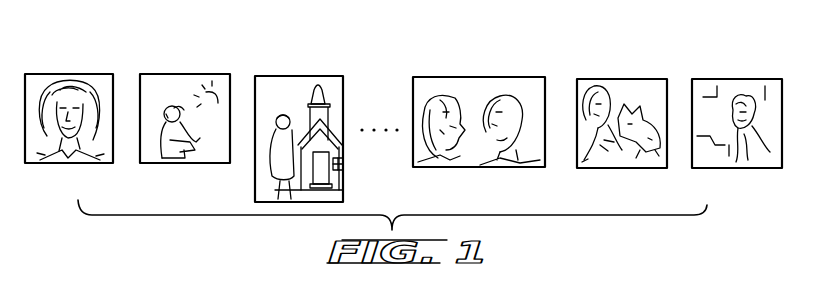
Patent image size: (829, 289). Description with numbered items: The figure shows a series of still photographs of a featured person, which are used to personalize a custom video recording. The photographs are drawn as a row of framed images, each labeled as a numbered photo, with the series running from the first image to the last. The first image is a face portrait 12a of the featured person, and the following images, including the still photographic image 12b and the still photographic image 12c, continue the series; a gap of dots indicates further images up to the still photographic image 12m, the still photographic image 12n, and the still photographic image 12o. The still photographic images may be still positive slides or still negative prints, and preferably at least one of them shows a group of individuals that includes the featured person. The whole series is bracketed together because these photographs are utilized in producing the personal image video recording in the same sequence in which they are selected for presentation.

The face portrait 12a is at (90, 166).
The still photographic image 12b is at (211, 166).
The still photographic image 12c is at (343, 152).
The still photographic image 12m is at (517, 169).
The still photographic image 12n is at (651, 172).
The still photographic image 12o is at (758, 172).